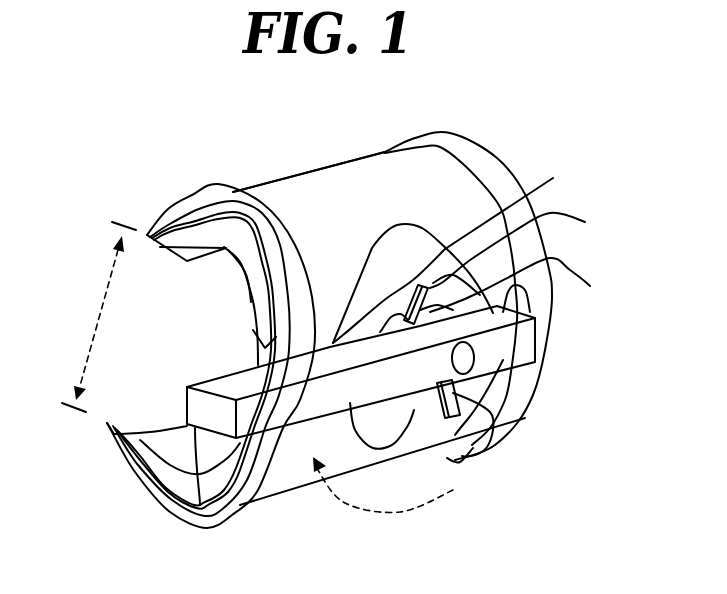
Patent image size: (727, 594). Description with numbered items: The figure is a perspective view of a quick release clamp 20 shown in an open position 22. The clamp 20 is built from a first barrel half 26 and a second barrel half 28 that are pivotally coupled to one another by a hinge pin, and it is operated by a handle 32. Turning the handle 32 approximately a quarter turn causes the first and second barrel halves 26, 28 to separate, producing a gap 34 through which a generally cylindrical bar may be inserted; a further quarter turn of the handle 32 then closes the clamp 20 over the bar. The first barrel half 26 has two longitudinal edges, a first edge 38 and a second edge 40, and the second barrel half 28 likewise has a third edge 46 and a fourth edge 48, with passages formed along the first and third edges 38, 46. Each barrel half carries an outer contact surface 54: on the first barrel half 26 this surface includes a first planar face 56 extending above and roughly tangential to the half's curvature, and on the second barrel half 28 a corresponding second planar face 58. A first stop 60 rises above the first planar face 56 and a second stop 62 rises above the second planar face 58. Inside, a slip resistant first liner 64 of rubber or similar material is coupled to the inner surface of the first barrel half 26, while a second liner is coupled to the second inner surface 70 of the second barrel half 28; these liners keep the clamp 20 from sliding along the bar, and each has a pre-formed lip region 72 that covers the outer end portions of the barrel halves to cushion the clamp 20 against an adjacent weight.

The quick release clamp 20 is at (604, 568).
The open position 22 is at (22, 229).
The first barrel half 26 is at (450, 140).
The second barrel half 28 is at (478, 450).
The handle 32 is at (527, 338).
The gap 34 is at (94, 317).
The first edge 38 is at (300, 345).
The second edge 40 is at (150, 231).
The third edge 46 is at (277, 437).
The fourth edge 48 is at (103, 425).
The outer contact surface 54 is at (470, 385).
The first planar face 56 is at (525, 285).
The second planar face 58 is at (410, 406).
The first stop 60 is at (458, 251).
The second stop 62 is at (460, 398).
The first liner 64 is at (185, 238).
The second inner surface 70 is at (167, 475).
The lip region 72 is at (209, 240).